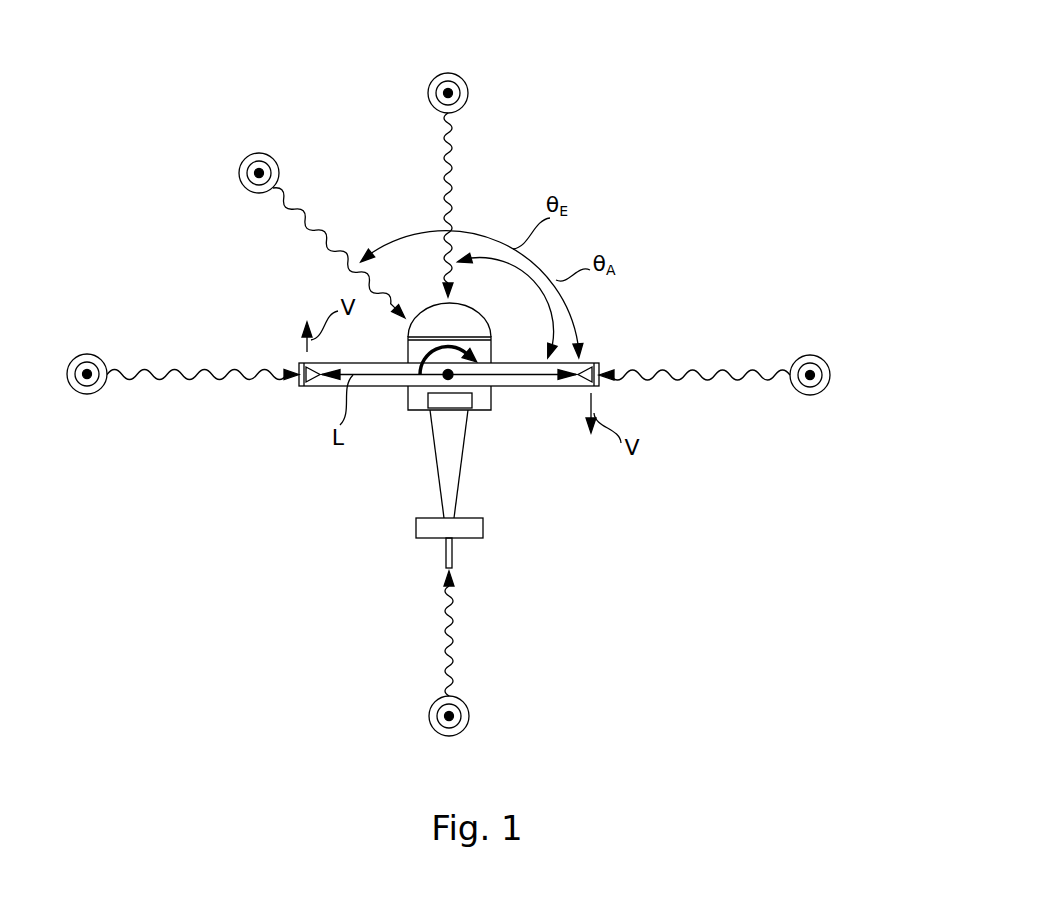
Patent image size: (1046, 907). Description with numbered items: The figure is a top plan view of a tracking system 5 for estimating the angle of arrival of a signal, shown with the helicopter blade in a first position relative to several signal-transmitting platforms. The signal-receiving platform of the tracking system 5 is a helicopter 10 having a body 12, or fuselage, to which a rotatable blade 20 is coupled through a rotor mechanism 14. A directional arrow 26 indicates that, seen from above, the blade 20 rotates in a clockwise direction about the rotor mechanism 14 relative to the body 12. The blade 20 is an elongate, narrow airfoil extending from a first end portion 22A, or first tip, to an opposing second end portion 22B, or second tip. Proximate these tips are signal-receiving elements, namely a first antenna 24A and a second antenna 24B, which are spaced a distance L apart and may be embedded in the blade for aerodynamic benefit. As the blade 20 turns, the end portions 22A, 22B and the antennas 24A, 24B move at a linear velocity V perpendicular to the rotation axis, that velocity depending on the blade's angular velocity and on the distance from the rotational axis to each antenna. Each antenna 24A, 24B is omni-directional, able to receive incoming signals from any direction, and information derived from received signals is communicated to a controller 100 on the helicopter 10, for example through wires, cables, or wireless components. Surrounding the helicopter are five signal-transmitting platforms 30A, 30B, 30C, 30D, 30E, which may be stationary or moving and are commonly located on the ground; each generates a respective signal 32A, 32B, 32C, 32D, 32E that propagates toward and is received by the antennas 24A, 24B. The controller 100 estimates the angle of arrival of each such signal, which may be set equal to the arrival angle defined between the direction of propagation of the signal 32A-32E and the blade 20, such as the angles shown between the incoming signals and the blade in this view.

The tracking system 5 is at (662, 122).
The helicopter 10 is at (428, 492).
The body 12 is at (484, 411).
The rotor mechanism 14 is at (452, 377).
The blade 20 is at (567, 388).
The first end portion 22A is at (301, 388).
The second end portion 22B is at (600, 388).
The first antenna 24A is at (299, 364).
The second antenna 24B is at (597, 362).
The directional arrow 26 is at (421, 360).
The signal-transmitting platform 30A is at (462, 79).
The signal-transmitting platform 30B is at (826, 360).
The signal-transmitting platform 30C is at (467, 706).
The signal-transmitting platform 30D is at (93, 355).
The signal-transmitting platform 30E is at (274, 159).
The signal 32A is at (452, 200).
The signal 32B is at (690, 368).
The signal 32C is at (452, 655).
The signal 32D is at (170, 372).
The signal 32E is at (318, 222).
The controller 100 is at (428, 407).